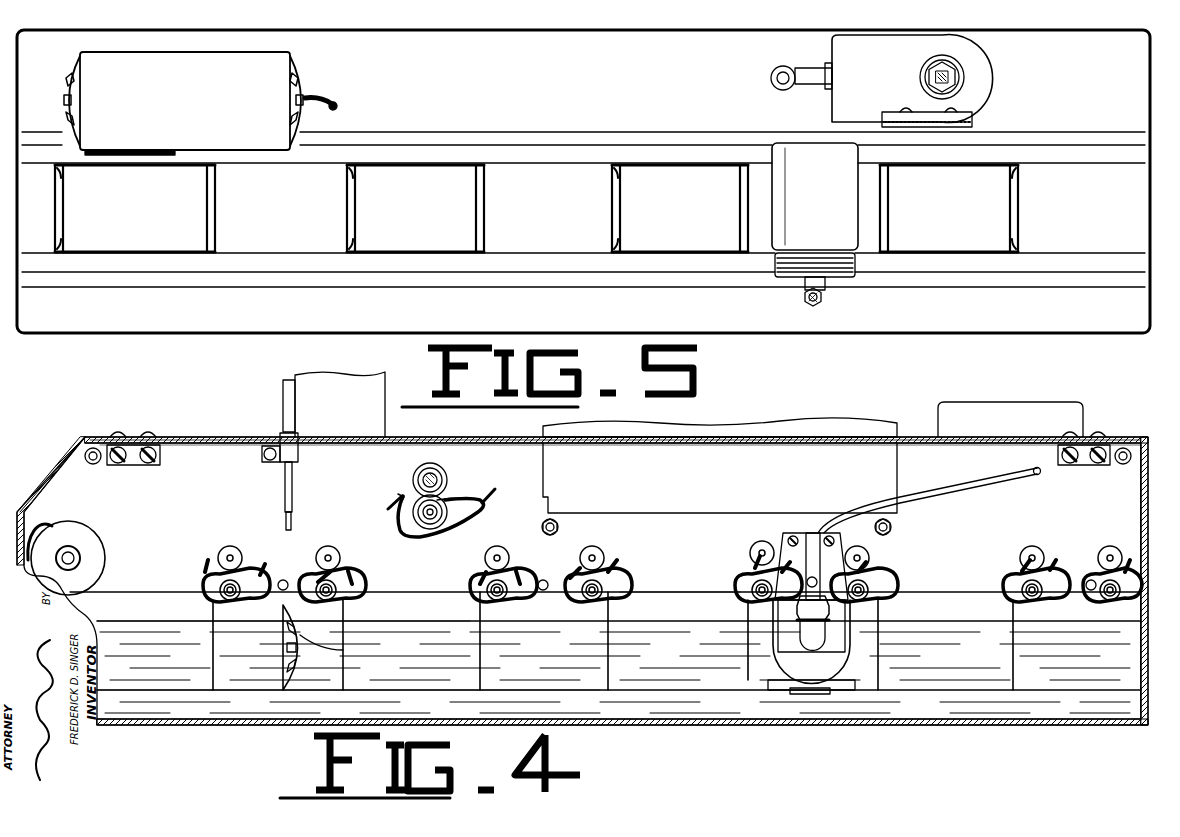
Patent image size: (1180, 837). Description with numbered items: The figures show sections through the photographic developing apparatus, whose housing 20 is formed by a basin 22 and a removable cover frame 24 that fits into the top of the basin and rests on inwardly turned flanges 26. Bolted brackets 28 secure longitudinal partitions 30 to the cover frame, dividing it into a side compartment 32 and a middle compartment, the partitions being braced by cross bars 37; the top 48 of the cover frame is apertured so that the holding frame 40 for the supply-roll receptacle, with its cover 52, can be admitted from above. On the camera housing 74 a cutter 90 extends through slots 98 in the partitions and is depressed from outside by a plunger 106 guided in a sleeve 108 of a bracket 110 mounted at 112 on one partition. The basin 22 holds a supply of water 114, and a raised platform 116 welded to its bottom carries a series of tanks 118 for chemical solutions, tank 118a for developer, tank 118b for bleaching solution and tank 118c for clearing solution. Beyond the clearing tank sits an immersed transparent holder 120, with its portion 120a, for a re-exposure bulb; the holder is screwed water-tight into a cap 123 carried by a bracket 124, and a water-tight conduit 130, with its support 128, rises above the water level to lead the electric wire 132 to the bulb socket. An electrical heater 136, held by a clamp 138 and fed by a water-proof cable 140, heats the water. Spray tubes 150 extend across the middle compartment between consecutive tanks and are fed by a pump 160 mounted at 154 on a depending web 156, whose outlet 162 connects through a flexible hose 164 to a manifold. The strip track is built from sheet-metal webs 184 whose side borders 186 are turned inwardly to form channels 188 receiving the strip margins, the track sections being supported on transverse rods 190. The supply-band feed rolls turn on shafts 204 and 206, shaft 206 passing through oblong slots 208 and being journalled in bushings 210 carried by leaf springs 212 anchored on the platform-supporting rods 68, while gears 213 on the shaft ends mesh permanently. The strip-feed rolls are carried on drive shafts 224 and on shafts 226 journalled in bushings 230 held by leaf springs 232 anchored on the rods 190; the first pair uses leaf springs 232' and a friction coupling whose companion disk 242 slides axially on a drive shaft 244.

In FIG. 4, the housing 20 is at (72, 437).
In FIG. 5, the basin 22 is at (840, 336).
In FIG. 4, the basin 22 is at (176, 730).
In FIG. 4, the cover frame 24 is at (207, 433).
In FIG. 4, the inwardly turned flanges 26 is at (1133, 581).
In FIG. 4, the bolted brackets 28 is at (133, 466).
In FIG. 4, the longitudinal partitions 30 is at (677, 592).
In FIG. 4, the side compartment 32 is at (232, 458).
In FIG. 4, the cross-ties or bars 37 is at (93, 465).
In FIG. 4, the holding frame 40 is at (885, 468).
In FIG. 4, the top of the cover frame 48 is at (432, 437).
In FIG. 4, the cover 52 is at (862, 420).
In FIG. 4, the platform-supporting rods 68 is at (496, 500).
In FIG. 4, the camera housing 74 is at (342, 380).
In FIG. 4, the cutter 90 is at (292, 480).
In FIG. 4, the slots 98 is at (292, 494).
In FIG. 4, the plunger 106 is at (295, 403).
In FIG. 4, the sleeve 108 is at (298, 452).
In FIG. 4, the bracket 110 is at (275, 462).
In FIG. 4, the bracket mounting 112 is at (265, 452).
In FIG. 4, the water 114 is at (408, 622).
In FIG. 4, the raised platform 116 is at (534, 690).
In FIG. 4, the tanks 118 is at (213, 610).
In FIG. 5, the developer tank 118a is at (218, 208).
In FIG. 5, the bleaching solution tank 118b is at (484, 200).
In FIG. 5, the clearing solution tank 118c is at (748, 210).
In FIG. 5, the transparent holder 120 is at (858, 212).
In FIG. 4, the transparent holder 120 is at (811, 642).
In FIG. 5, the filter housing wall 120a is at (858, 222).
In FIG. 5, the cap 123 is at (855, 263).
In FIG. 4, the cap 123 is at (845, 662).
In FIG. 5, the bracket 124 is at (790, 280).
In FIG. 4, the bracket 124 is at (846, 648).
In FIG. 4, the pipe support bracket 128 is at (794, 536).
In FIG. 5, the water-tight conduit 130 is at (823, 294).
In FIG. 4, the water-tight conduit 130 is at (830, 610).
In FIG. 5, the electric wire 132 is at (809, 304).
In FIG. 4, the electric wire 132 is at (958, 490).
In FIG. 5, the electrical heater 136 is at (282, 64).
In FIG. 4, the electrical heater 136 is at (283, 612).
In FIG. 5, the clamp 138 is at (128, 150).
In FIG. 4, the water-proof electric cable 140 is at (318, 655).
In FIG. 4, the spray tubes 150 is at (282, 580).
In FIG. 5, the pump mounting 154 is at (945, 107).
In FIG. 5, the depending web 156 is at (948, 126).
In FIG. 5, the pump 160 is at (826, 108).
In FIG. 5, the outlet 162 is at (806, 68).
In FIG. 5, the flexible hose 164 is at (777, 86).
In FIG. 5, the web 184 is at (63, 208).
In FIG. 5, the side borders 186 is at (56, 172).
In FIG. 5, the channels 188 is at (58, 180).
In FIG. 4, the transverse rods 190 is at (204, 576).
In FIG. 4, the shaft 204 is at (428, 472).
In FIG. 4, the shaft 206 is at (447, 513).
In FIG. 4, the oblong slots 208 is at (411, 534).
In FIG. 4, the bushings 210 is at (440, 506).
In FIG. 4, the leaf springs 212 is at (458, 497).
In FIG. 4, the gears 213 is at (412, 482).
In FIG. 4, the drive shafts 224 is at (230, 555).
In FIG. 4, the shafts 226 is at (1038, 604).
In FIG. 4, the bushings 230 is at (848, 590).
In FIG. 4, the leaf springs 232 is at (663, 591).
In FIG. 4, the leaf springs 232' is at (51, 525).
In FIG. 4, the companion disk 242 is at (90, 535).
In FIG. 4, the drive shaft 244 is at (67, 546).